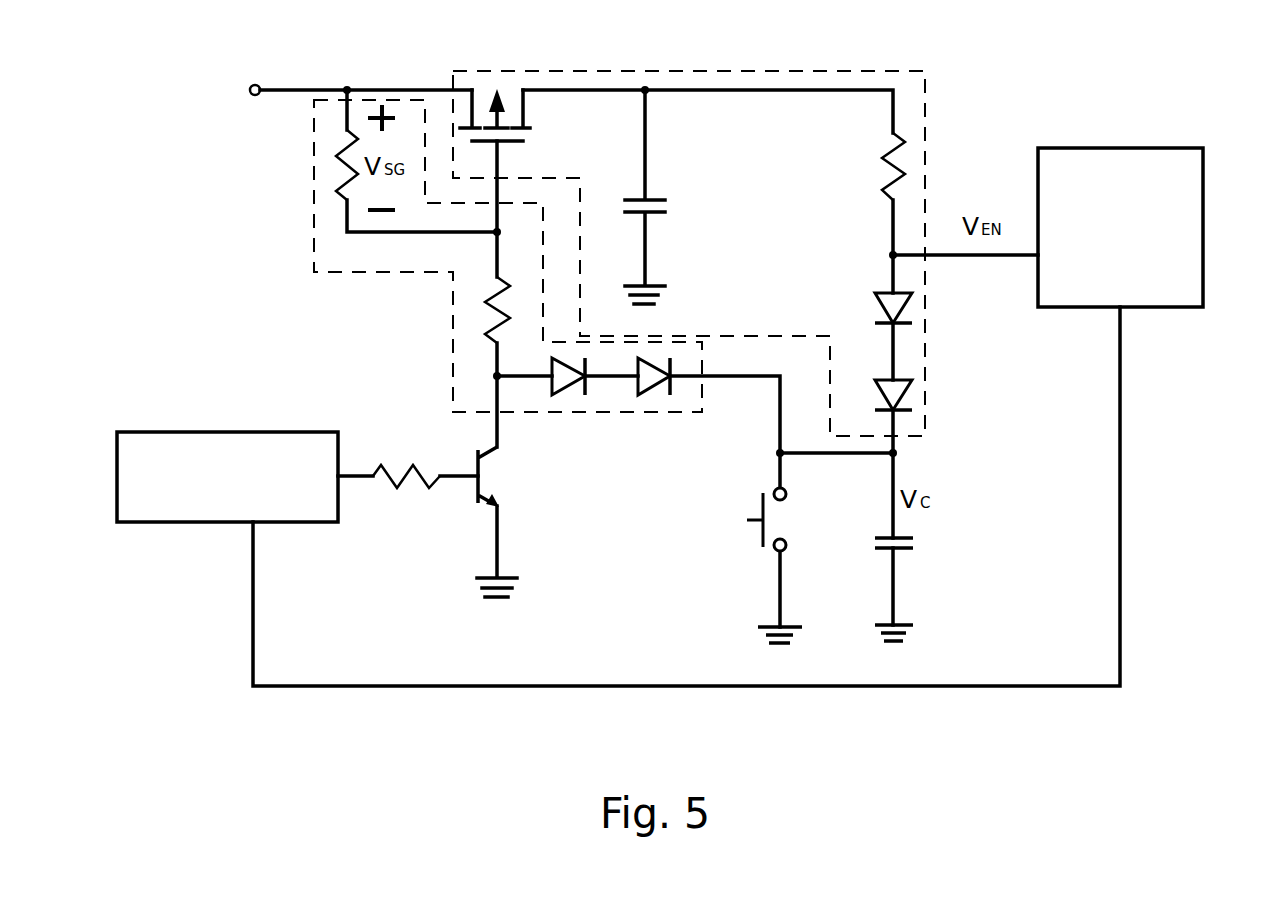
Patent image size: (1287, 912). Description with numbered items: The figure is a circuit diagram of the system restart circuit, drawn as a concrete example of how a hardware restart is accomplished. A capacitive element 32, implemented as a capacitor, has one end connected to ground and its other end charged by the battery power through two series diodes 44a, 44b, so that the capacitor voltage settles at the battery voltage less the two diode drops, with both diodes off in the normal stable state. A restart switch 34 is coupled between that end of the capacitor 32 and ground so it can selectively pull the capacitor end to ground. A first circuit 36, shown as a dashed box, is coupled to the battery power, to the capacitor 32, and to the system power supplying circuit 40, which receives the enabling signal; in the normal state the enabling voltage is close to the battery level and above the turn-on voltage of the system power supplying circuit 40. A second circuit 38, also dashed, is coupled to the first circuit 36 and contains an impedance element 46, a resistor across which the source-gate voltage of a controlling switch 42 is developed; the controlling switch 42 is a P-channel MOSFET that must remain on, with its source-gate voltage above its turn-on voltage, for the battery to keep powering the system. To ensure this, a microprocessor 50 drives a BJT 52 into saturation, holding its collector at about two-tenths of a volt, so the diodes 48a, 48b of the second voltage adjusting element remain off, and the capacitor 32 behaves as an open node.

The capacitive element 32 is at (890, 560).
The restart switch 34 is at (744, 535).
The first circuit 36 is at (703, 70).
The second circuit 38 is at (313, 244).
The system power supplying circuit 40 is at (1205, 258).
The controlling switch 42 is at (533, 117).
The diode 44a is at (914, 310).
The diode 44b is at (914, 398).
The impedance element 46 is at (331, 170).
The diode 48a is at (572, 396).
The diode 48b is at (659, 396).
The microprocessor 50 is at (250, 431).
The BJT 52 is at (472, 515).